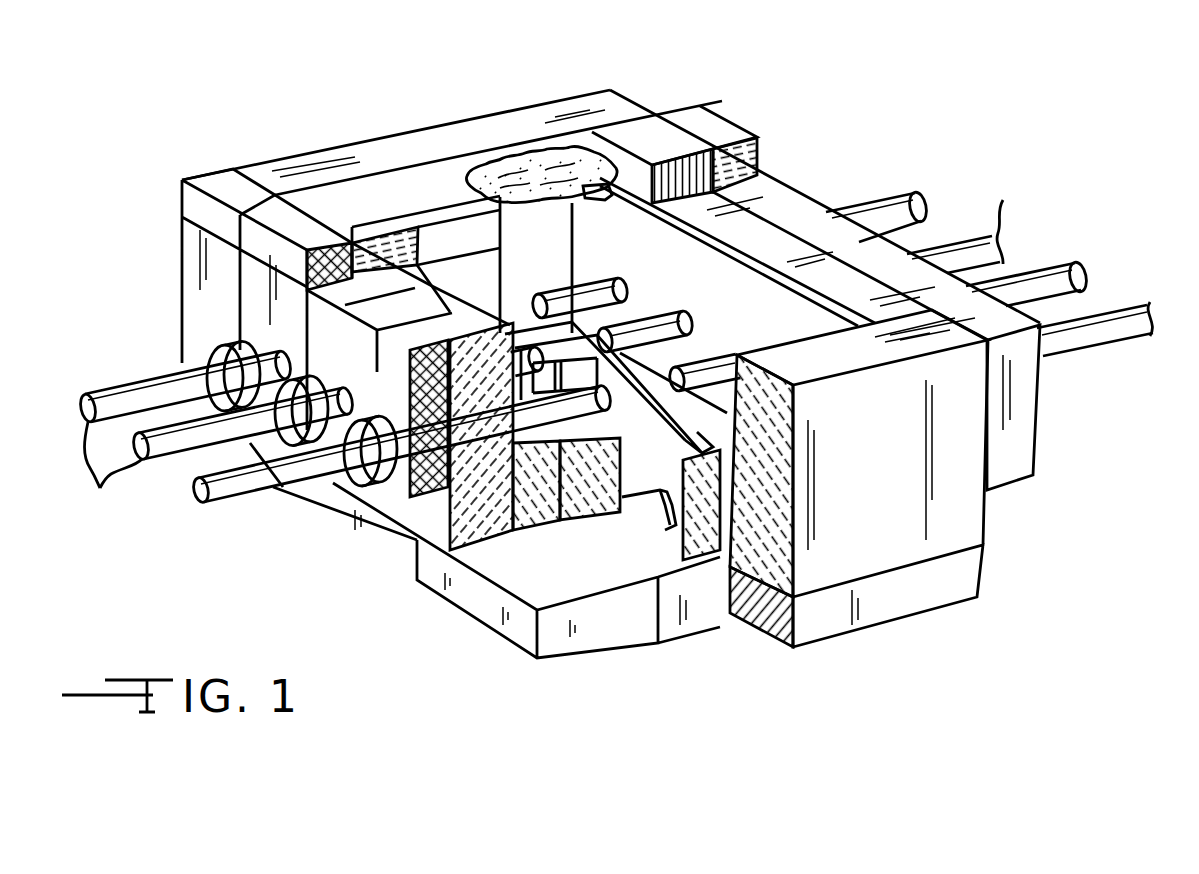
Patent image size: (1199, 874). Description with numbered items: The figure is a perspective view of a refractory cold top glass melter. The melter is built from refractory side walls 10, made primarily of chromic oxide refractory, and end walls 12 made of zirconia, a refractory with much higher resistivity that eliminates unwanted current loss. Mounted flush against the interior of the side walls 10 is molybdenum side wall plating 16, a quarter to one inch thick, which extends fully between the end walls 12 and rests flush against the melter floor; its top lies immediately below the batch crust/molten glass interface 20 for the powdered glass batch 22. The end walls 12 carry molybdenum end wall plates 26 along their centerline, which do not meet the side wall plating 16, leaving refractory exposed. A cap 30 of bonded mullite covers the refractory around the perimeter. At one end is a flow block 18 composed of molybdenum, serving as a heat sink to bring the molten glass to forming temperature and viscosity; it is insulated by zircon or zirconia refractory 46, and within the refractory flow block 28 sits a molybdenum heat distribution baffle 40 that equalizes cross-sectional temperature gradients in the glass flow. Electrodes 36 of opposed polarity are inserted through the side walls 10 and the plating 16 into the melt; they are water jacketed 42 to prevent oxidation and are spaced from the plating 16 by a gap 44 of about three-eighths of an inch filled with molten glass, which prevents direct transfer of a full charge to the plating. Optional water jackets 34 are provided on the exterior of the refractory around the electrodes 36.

The side walls 10 is at (347, 305).
The end walls 12 is at (402, 152).
The molybdenum side wall plating 16 is at (778, 242).
The flow block 18 is at (648, 388).
The batch crust/molten glass interface 20 is at (610, 190).
The powdered glass batch 22 is at (523, 153).
The molybdenum end wall plates 26 is at (468, 267).
The refractory flow block 28 is at (553, 513).
The cap 30 is at (218, 183).
The water jackets 34 is at (257, 317).
The electrodes 36 is at (933, 204).
The heat distribution baffle 40 is at (653, 513).
The electrode water jacket 42 is at (343, 500).
The gap 44 is at (640, 313).
The zircon or zirconia refractory 46 is at (540, 535).